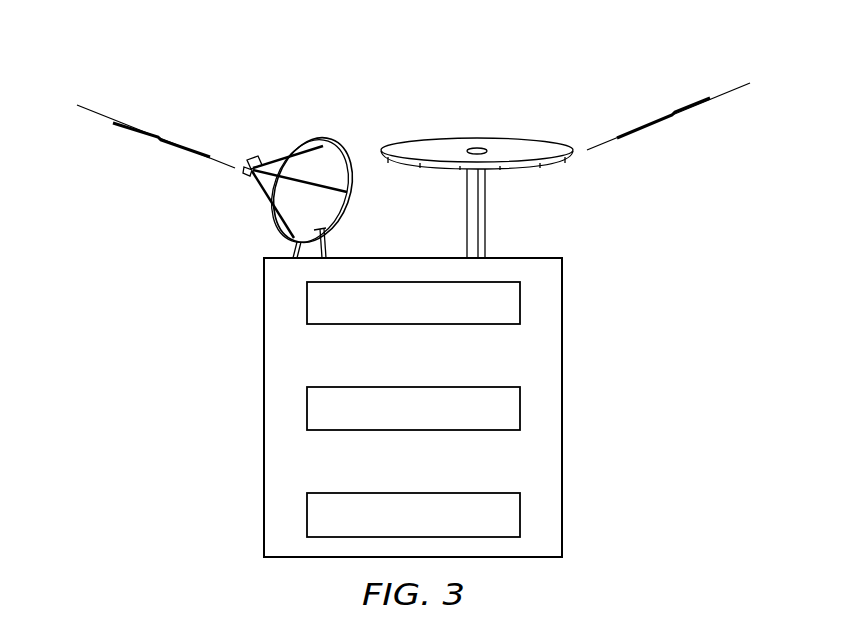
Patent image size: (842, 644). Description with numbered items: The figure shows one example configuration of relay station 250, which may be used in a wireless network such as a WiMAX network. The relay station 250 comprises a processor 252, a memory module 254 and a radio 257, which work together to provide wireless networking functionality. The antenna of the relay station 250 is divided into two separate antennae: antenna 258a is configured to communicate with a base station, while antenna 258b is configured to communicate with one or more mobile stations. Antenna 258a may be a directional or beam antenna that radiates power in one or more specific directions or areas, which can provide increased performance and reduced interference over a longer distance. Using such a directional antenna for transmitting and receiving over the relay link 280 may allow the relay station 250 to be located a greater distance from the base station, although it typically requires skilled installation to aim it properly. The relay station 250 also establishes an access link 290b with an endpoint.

The relay station 250 is at (572, 485).
The processor 252 is at (348, 326).
The memory module 254 is at (477, 385).
The radio 257 is at (412, 493).
The directional antenna 258a is at (303, 151).
The antenna 258b is at (477, 128).
The relay link 280 is at (137, 128).
The access link 290b is at (707, 97).